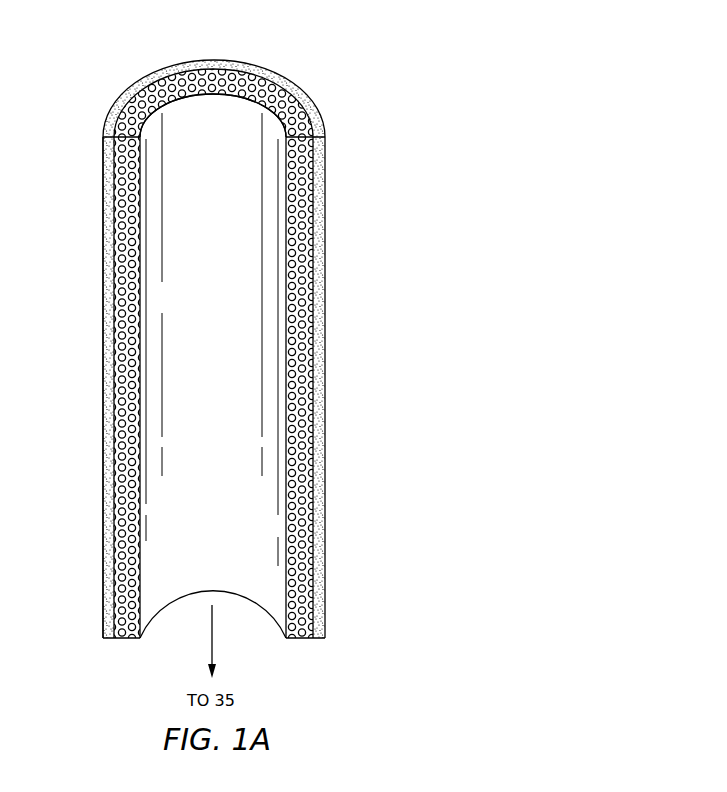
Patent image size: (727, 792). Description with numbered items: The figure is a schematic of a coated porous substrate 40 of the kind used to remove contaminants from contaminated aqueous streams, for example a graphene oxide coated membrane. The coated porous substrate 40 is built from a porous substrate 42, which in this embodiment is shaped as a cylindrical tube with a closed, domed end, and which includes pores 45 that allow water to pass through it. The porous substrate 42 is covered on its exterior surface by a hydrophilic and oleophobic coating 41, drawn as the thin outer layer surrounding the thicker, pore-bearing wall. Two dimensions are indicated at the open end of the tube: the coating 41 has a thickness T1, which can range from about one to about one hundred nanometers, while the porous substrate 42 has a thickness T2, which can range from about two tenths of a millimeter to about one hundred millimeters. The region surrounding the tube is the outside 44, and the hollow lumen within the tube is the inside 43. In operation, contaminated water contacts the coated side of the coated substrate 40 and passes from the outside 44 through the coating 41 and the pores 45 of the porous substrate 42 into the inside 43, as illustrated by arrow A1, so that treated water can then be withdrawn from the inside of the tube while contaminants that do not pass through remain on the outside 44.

The coated porous substrate 40 is at (233, 328).
The hydrophilic and oleophobic coating 41 is at (325, 366).
The porous substrate 42 is at (130, 548).
The inside 43 is at (203, 117).
The outside 44 is at (378, 285).
The pores 45 is at (300, 465).
The arrow A1 is at (158, 296).
The thickness of the hydrophilic and oleophobic coating T1 is at (147, 655).
The thickness of the porous substrate T2 is at (357, 655).